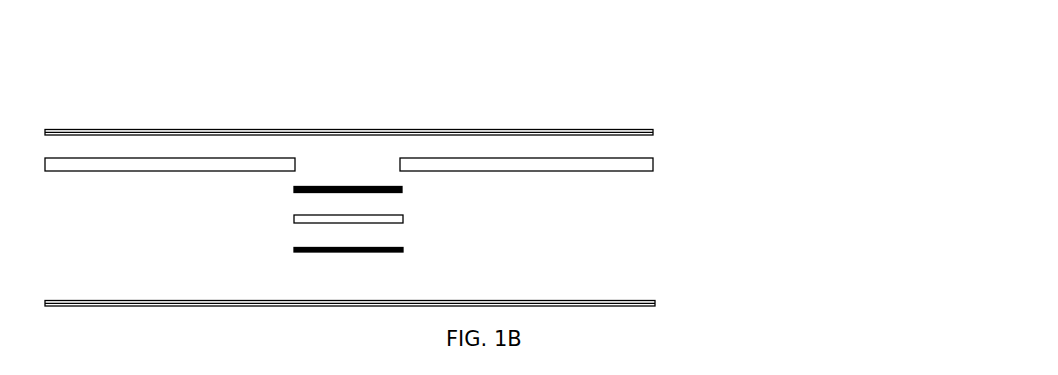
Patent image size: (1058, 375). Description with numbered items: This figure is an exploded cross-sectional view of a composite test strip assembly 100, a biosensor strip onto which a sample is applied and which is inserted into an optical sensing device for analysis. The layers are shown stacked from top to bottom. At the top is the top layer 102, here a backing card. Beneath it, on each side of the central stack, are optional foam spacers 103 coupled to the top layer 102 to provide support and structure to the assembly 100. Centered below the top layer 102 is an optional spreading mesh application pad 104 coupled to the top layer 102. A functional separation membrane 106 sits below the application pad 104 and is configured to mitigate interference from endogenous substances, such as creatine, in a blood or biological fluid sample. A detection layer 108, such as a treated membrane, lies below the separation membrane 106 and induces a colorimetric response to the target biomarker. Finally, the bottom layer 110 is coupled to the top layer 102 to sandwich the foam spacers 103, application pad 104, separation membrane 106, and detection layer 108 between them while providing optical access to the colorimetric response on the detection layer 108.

The test strip assembly 100 is at (803, 86).
The top layer 102 is at (676, 132).
The foam spacers 103 is at (676, 170).
The spreading mesh application pad 104 is at (424, 190).
The separation membrane 106 is at (424, 219).
The detection layer 108 is at (424, 250).
The bottom layer 110 is at (678, 302).